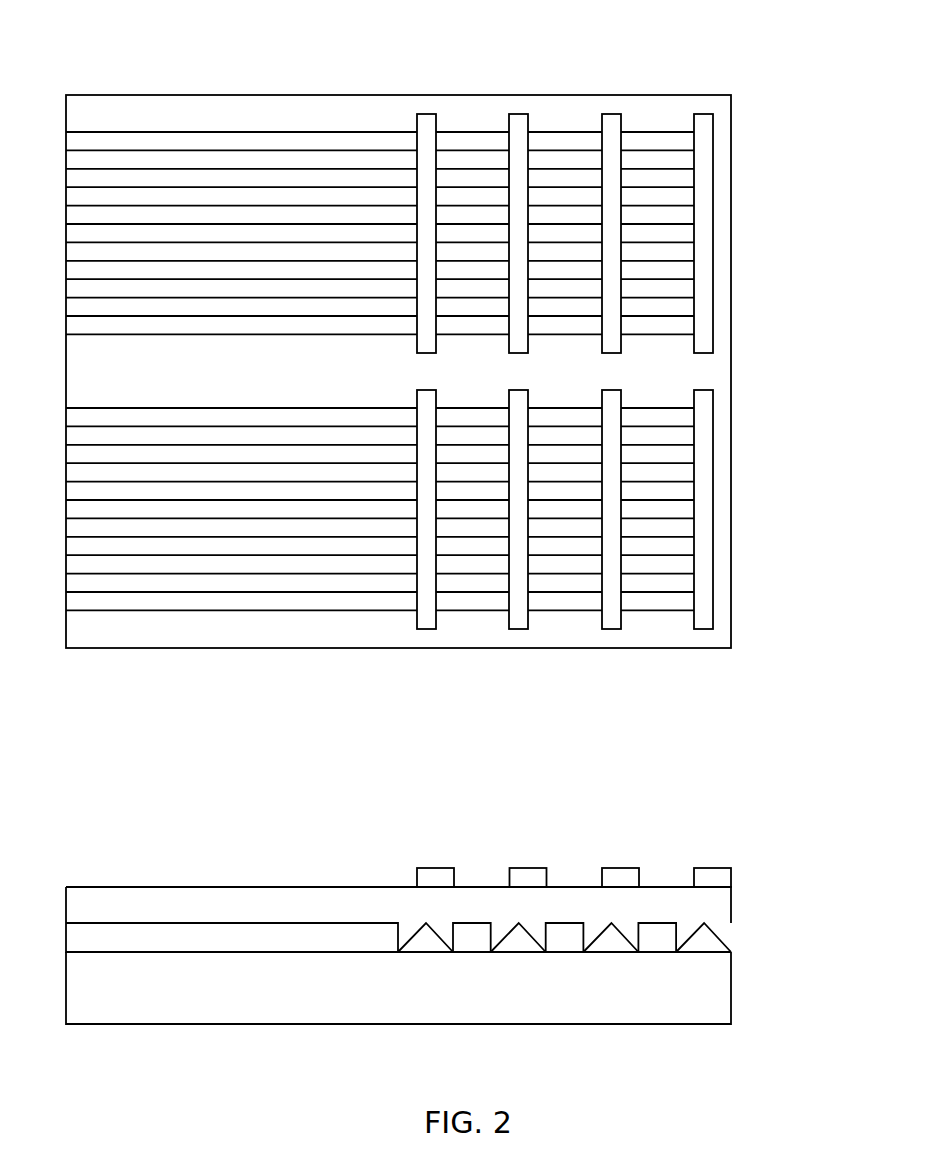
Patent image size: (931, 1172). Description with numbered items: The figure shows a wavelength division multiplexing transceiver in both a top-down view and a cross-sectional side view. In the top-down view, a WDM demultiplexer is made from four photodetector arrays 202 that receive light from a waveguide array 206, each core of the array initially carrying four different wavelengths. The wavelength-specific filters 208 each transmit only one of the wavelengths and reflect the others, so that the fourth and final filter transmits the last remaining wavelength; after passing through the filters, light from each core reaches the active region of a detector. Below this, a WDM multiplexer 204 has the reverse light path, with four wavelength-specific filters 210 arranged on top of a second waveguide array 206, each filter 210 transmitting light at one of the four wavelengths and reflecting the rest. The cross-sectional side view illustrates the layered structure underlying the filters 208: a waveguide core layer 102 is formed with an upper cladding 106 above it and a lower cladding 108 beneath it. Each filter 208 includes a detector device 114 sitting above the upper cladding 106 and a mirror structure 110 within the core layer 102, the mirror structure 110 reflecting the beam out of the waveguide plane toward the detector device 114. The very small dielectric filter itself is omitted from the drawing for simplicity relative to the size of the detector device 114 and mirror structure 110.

The waveguide core layer 102 is at (731, 950).
The upper cladding 106 is at (731, 907).
The lower cladding 108 is at (731, 1000).
The mirror structure 110 is at (417, 953).
The detector device 114 is at (430, 868).
The photodetector arrays 202 is at (448, 183).
The WDM multiplexer 204 is at (448, 561).
The waveguide array 206 is at (252, 132).
The wavelength-specific filters 208 is at (614, 114).
The wavelength-specific filters 210 is at (610, 630).